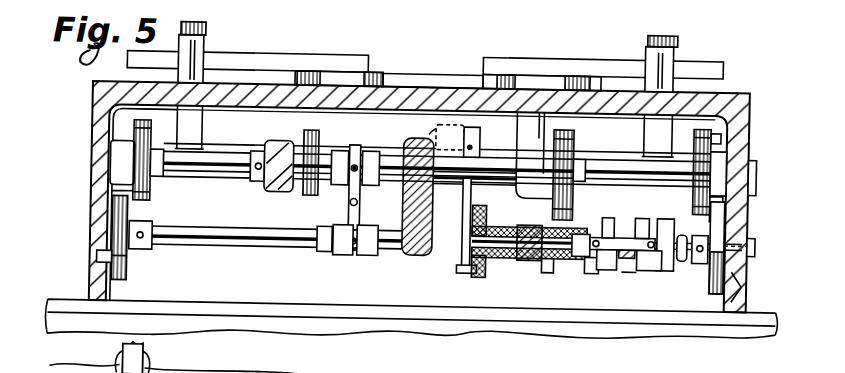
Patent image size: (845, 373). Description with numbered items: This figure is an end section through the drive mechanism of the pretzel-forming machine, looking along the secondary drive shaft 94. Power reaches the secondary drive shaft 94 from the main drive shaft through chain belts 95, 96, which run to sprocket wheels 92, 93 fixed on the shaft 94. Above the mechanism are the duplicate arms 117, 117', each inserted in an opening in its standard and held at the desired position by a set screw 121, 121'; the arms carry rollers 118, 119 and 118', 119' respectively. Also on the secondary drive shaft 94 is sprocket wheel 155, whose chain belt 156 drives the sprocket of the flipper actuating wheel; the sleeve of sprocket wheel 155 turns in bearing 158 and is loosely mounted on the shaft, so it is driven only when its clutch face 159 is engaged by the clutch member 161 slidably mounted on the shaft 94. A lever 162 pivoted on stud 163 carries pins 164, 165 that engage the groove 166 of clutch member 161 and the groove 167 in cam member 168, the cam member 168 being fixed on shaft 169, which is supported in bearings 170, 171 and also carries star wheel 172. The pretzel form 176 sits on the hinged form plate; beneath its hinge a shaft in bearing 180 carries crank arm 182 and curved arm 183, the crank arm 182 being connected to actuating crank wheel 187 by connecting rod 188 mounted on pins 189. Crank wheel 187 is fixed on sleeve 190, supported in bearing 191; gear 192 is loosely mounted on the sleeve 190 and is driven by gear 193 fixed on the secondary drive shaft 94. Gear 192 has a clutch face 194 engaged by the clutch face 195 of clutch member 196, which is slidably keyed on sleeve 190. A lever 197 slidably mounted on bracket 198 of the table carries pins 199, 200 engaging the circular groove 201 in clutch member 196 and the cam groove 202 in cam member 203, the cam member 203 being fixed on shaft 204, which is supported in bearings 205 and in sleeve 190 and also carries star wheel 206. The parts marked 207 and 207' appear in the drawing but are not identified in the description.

The sprocket wheel 92 is at (758, 164).
The sprocket wheel 93 is at (95, 186).
The secondary drive shaft 94 is at (218, 157).
The chain belt 95 is at (730, 153).
The chain belt 96 is at (109, 113).
The arm 117 is at (248, 53).
The arm 117' is at (624, 51).
The roller 118 is at (323, 52).
The roller 118' is at (586, 63).
The roller 119 is at (378, 61).
The roller 119' is at (518, 62).
The set screw 121 is at (218, 78).
The set screw 121' is at (686, 86).
The sprocket wheel 155 is at (285, 186).
The chain belt 156 is at (338, 178).
The bearing 158 is at (258, 183).
The clutch face 159 is at (314, 191).
The clutch member 161 is at (363, 198).
The lever 162 is at (324, 247).
The stud 163 is at (292, 243).
The pin 164 is at (357, 162).
The pin 165 is at (366, 250).
The groove 166 is at (358, 156).
The groove 167 is at (361, 251).
The cam member 168 is at (333, 252).
The shaft 169 is at (212, 243).
The bearing 170 is at (418, 244).
The bearing 171 is at (100, 255).
The star wheel 172 is at (100, 280).
The pretzel form 176 is at (422, 72).
The bearing 180 is at (466, 120).
The crank arm 182 is at (472, 136).
The curved arm 183 is at (430, 112).
The actuating crank wheel 187 is at (490, 263).
The connecting rod 188 is at (486, 268).
The pins 189 is at (468, 266).
The sleeve 190 is at (500, 218).
The bearing 191 is at (550, 265).
The gear 192 is at (594, 264).
The gear 193 is at (575, 126).
The clutch face 194 is at (583, 224).
The clutch face 195 is at (622, 196).
The clutch member 196 is at (610, 227).
The lever 197 is at (672, 226).
The bracket 198 is at (620, 255).
The pin 199 is at (604, 261).
The pin 200 is at (685, 252).
The circular groove 201 is at (630, 262).
The cam groove 202 is at (656, 261).
The cam member 203 is at (705, 255).
The shaft 204 is at (758, 240).
The bearings 205 is at (750, 268).
The star wheel 206 is at (724, 224).
The gear 207 is at (750, 163).
The bearing 207' is at (84, 162).